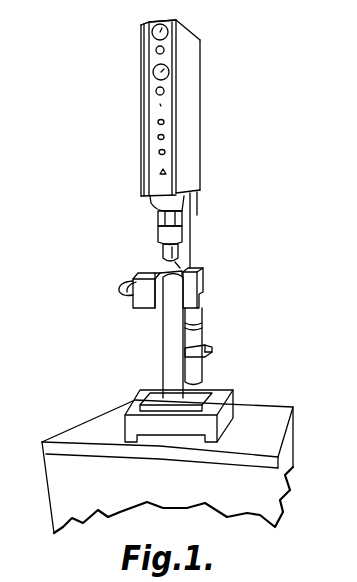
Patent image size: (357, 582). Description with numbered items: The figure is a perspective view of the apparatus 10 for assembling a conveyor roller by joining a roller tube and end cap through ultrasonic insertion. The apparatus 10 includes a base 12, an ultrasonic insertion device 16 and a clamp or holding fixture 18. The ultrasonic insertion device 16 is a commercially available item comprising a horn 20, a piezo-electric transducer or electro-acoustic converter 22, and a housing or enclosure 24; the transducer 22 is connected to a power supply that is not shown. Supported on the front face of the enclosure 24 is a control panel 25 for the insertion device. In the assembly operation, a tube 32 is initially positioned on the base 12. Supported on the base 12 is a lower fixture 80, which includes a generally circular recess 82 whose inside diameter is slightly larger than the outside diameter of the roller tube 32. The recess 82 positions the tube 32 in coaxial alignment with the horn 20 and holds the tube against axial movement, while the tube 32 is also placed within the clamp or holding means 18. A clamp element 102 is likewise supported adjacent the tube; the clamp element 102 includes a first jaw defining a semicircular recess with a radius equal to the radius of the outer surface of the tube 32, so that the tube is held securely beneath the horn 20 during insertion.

The apparatus 10 is at (171, 266).
The base 12 is at (219, 398).
The ultrasonic insertion device 16 is at (183, 134).
The clamp or holding fixture 18 is at (108, 277).
The horn 20 is at (160, 246).
The piezo-electric transducer 22 is at (158, 208).
The housing or enclosure 24 is at (141, 111).
The control panel 25 is at (148, 22).
The tube 32 is at (168, 342).
The lower fixture 80 is at (133, 400).
The circular recess 82 is at (246, 406).
The clamp element 102 is at (211, 259).